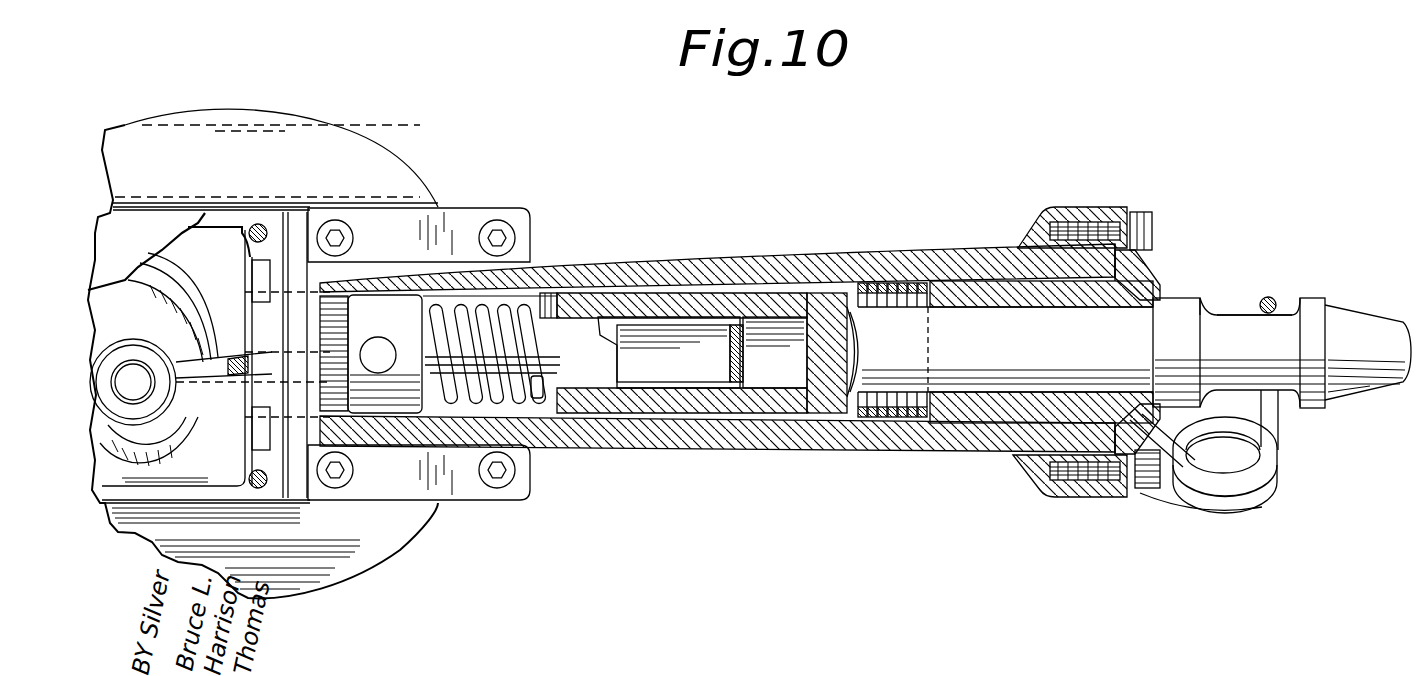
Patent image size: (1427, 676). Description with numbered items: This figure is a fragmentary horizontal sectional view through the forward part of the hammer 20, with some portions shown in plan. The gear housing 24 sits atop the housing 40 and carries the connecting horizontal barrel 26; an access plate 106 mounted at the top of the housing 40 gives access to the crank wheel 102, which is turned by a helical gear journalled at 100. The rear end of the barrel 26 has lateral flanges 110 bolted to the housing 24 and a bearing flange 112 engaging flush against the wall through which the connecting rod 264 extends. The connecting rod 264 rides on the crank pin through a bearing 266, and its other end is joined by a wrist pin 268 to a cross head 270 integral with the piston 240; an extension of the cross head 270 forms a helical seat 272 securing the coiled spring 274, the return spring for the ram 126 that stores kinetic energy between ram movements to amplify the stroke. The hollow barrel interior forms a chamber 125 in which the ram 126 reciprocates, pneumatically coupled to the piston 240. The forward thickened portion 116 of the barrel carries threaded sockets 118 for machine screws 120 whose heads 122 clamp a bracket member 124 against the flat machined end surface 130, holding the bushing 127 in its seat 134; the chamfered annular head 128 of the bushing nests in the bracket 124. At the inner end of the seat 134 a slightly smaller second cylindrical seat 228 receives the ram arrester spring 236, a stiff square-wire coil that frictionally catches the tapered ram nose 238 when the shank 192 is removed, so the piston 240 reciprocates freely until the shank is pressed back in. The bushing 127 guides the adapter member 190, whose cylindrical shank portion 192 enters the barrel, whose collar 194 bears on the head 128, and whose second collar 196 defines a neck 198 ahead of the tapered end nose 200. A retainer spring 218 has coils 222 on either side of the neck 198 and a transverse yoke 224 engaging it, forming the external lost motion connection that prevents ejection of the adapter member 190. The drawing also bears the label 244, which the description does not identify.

The hammer 20 is at (427, 546).
The gear housing 24 is at (128, 207).
The barrel 26 is at (735, 440).
The housing 40 is at (270, 545).
The journal 100 is at (163, 365).
The crank wheel 102 is at (135, 302).
The access plate 106 is at (145, 228).
The lateral flanges 110 is at (458, 218).
The bearing flange 112 is at (305, 470).
The thickened portion 116 is at (1000, 455).
The threaded sockets 118 is at (1062, 225).
The machine screws 120 is at (1088, 230).
The heads 122 is at (1146, 218).
The bracket member 124 is at (1160, 292).
The chamber 125 is at (660, 415).
The ram 126 is at (690, 305).
The bushing 127 is at (1015, 418).
The annular head 128 is at (1190, 482).
The surface 130 is at (1160, 268).
The seat 134 is at (1005, 295).
The adapter member 190 is at (951, 331).
The cylindrical shank portion 192 is at (1005, 349).
The collar 194 is at (1182, 313).
The second collar 196 is at (1308, 300).
The neck 198 is at (1235, 318).
The tapered end nose 200 is at (1345, 320).
The retainer spring 218 is at (1201, 514).
The coils 222 is at (1273, 502).
The transverse yoke 224 is at (1270, 297).
The second cylindrical seat 228 is at (895, 285).
The ram arrester spring 236 is at (880, 420).
The ram nose 238 is at (800, 407).
The piston 240 is at (625, 318).
The inner surface 244 is at (1072, 312).
The connecting rod 264 is at (233, 378).
The bearing 266 is at (160, 417).
The wrist pin 268 is at (396, 405).
The cross head 270 is at (353, 297).
The helical seat 272 is at (400, 352).
The coiled spring 274 is at (540, 293).